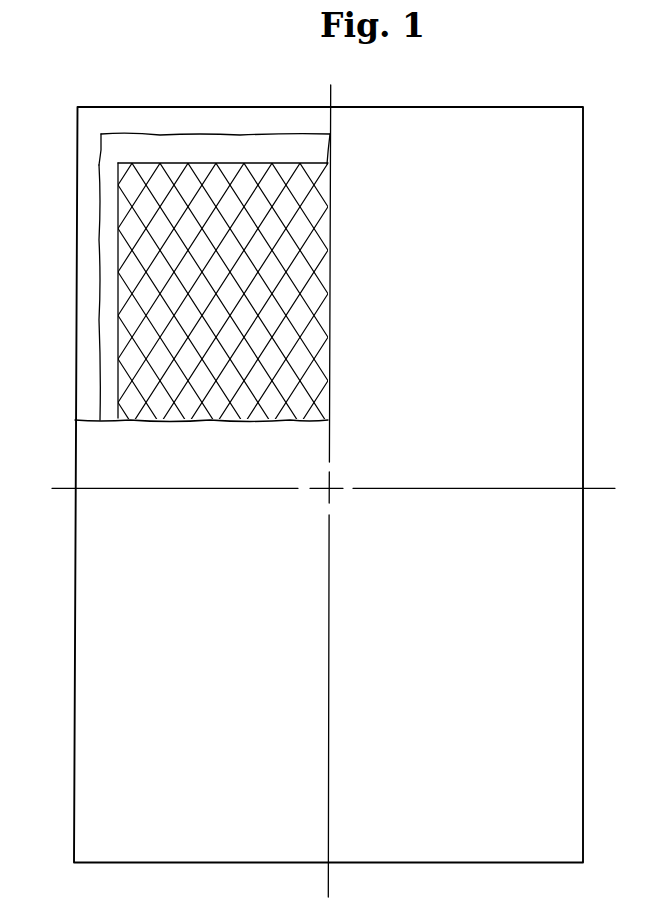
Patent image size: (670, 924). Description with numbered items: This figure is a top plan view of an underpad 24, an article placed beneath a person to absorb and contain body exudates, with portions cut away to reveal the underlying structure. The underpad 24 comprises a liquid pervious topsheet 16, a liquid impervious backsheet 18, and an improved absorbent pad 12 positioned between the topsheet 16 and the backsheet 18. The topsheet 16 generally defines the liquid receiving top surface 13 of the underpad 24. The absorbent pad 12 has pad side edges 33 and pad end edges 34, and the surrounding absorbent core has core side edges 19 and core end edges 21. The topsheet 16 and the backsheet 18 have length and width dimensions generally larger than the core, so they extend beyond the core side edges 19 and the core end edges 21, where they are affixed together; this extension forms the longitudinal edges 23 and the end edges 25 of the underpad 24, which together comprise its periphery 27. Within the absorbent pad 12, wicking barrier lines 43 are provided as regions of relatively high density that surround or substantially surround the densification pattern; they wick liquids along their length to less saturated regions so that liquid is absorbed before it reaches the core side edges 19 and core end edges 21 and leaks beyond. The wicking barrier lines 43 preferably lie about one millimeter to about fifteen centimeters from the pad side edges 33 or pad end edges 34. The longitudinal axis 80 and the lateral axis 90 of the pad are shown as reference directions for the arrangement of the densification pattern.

The absorbent pad 12 is at (120, 127).
The liquid receiving top surface 13 is at (93, 656).
The liquid pervious topsheet 16 is at (462, 257).
The liquid impervious backsheet 18 is at (217, 122).
The core side edges 19 is at (99, 317).
The core end edges 21 is at (169, 135).
The longitudinal edges 23 is at (73, 578).
The underpad 24 is at (533, 87).
The end edges 25 is at (150, 863).
The periphery 27 is at (227, 863).
The pad side edges 33 is at (99, 244).
The pad end edges 34 is at (284, 134).
The wicking barrier lines 43 is at (118, 174).
The longitudinal axis 80 is at (330, 887).
The lateral axis 90 is at (603, 488).